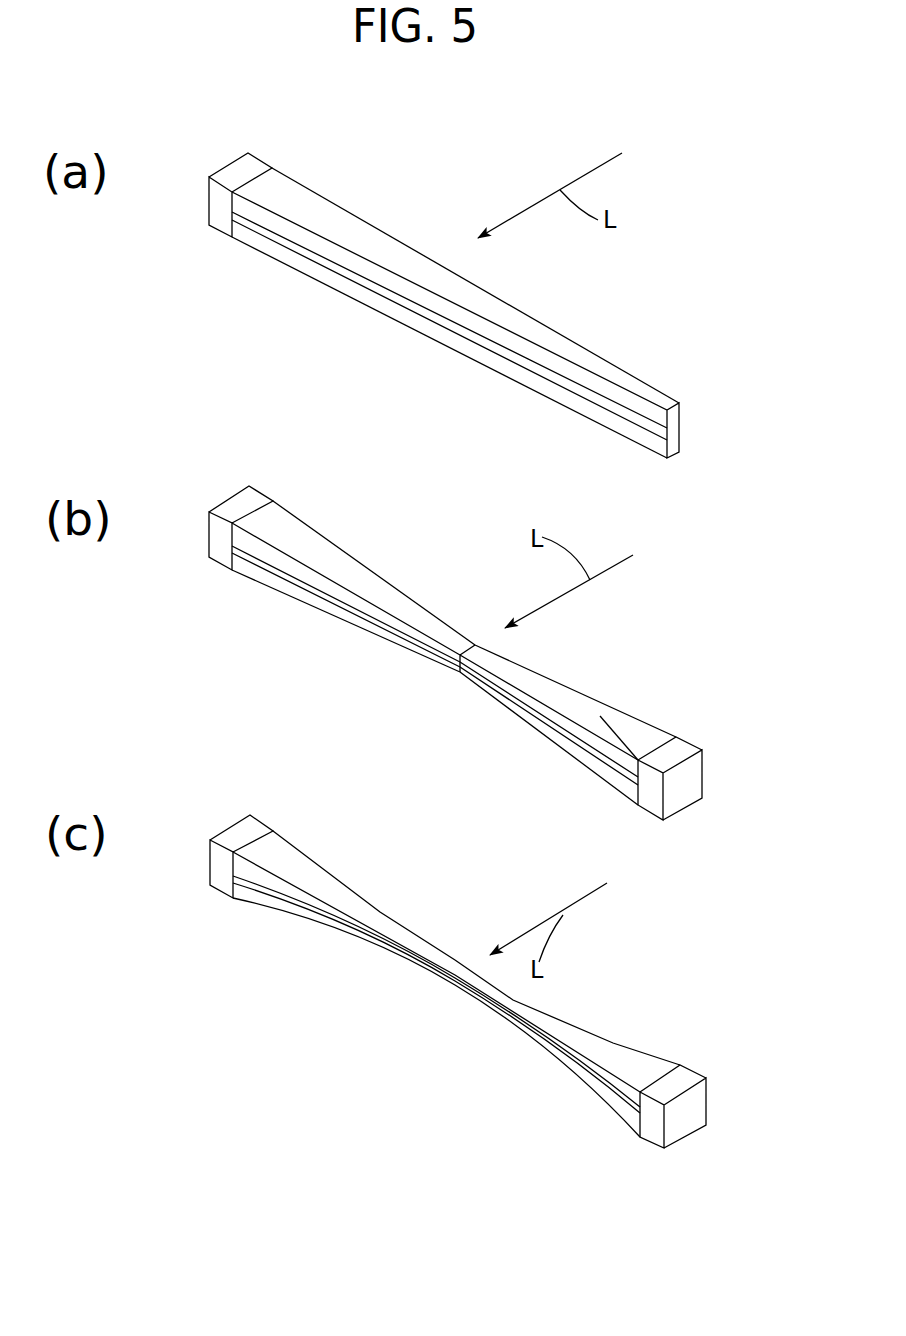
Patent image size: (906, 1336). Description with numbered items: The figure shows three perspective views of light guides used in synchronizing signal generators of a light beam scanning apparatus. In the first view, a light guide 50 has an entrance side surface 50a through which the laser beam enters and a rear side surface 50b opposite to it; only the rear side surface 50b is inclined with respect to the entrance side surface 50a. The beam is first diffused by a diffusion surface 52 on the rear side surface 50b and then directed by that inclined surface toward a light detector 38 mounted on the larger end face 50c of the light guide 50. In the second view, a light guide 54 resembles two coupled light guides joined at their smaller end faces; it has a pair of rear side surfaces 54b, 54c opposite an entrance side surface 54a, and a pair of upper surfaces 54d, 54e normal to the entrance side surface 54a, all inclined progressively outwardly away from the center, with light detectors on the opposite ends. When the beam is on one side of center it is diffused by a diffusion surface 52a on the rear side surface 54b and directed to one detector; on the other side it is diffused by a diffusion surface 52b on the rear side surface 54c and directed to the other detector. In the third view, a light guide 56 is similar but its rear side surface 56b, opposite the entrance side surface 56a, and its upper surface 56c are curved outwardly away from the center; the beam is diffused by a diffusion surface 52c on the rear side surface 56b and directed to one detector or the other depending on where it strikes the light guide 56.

The light detector 38 is at (218, 207).
The light guide 50 is at (461, 313).
The entrance side surface 50a is at (567, 337).
The rear side surface 50b is at (502, 365).
The larger end face 50c is at (257, 178).
The diffusion surface 52 is at (447, 323).
The diffusion surface 52a is at (277, 572).
The diffusion surface 52b is at (515, 697).
The diffusion surface 52c is at (310, 910).
The light guide 54 is at (472, 653).
The entrance side surface 54a is at (552, 678).
The rear side surface 54b is at (345, 615).
The rear side surface 54c is at (555, 735).
The upper surface 54d is at (358, 578).
The upper surface 54e is at (642, 740).
The light guide 56 is at (461, 984).
The entrance side surface 56a is at (562, 1020).
The rear side surface 56b is at (570, 1075).
The upper surface 56c is at (367, 917).